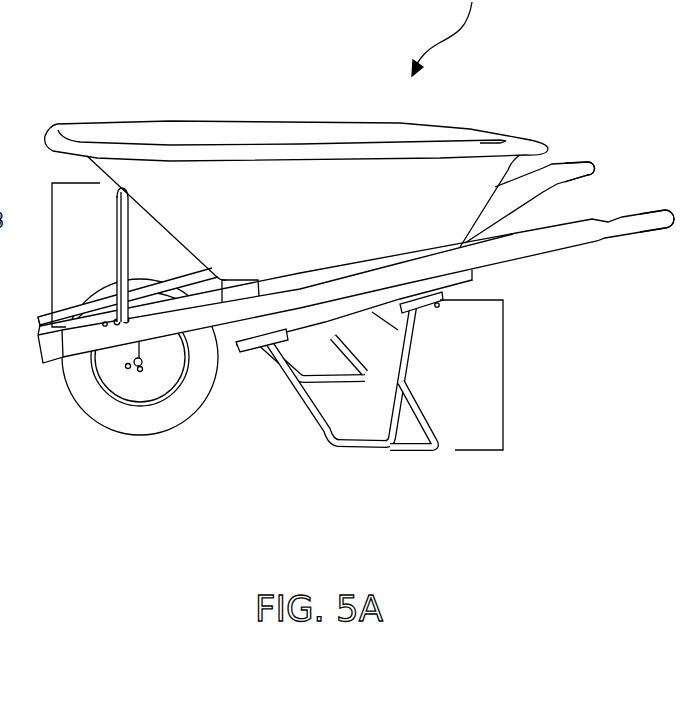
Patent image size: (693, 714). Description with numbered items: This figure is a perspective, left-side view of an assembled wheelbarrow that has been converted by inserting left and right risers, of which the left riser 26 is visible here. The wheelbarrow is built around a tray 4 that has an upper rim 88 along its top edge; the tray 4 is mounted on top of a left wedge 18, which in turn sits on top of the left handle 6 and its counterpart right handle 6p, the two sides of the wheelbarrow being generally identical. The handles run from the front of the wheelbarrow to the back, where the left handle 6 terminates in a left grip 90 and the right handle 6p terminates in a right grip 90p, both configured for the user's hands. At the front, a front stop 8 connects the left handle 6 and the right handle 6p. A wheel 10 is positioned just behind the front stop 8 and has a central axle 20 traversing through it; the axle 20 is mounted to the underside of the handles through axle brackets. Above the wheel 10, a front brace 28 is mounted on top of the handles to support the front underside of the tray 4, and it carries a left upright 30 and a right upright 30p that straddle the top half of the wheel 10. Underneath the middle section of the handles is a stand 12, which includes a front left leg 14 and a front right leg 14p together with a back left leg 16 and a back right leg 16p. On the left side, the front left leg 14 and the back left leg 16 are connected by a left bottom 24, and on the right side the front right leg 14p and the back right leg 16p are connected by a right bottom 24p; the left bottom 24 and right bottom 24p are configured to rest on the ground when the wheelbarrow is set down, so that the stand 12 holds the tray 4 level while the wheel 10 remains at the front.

The tray 4 is at (296, 159).
The left handle 6 is at (359, 251).
The right handle 6p is at (538, 161).
The front stop 8 is at (35, 327).
The wheel 10 is at (185, 390).
The stand 12 is at (394, 392).
The front left leg 14 is at (317, 412).
The front right leg 14p is at (275, 360).
The back left leg 16 is at (412, 355).
The back right leg 16p is at (327, 370).
The left wedge 18 is at (257, 288).
The central axle 20 is at (143, 372).
The left bottom 24 is at (362, 448).
The right bottom 24p is at (347, 380).
The left riser 26 is at (475, 278).
The front brace 28 is at (67, 255).
The left upright 30 is at (124, 267).
The right upright 30p is at (117, 235).
The upper rim 88 is at (266, 122).
The left grip 90 is at (647, 213).
The right grip 90p is at (572, 163).